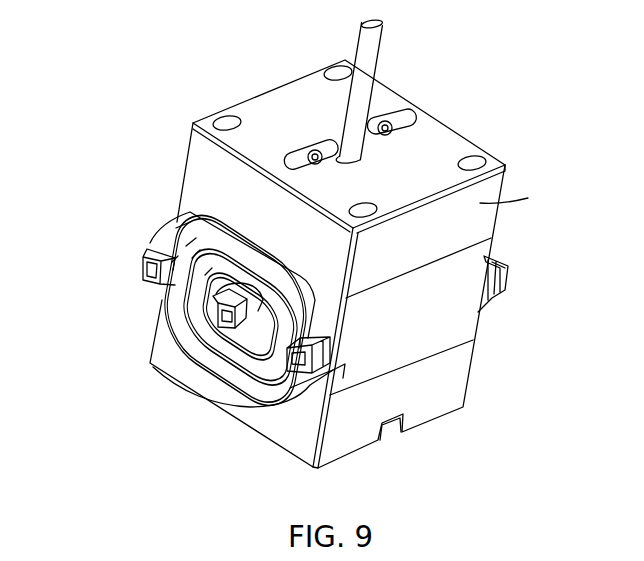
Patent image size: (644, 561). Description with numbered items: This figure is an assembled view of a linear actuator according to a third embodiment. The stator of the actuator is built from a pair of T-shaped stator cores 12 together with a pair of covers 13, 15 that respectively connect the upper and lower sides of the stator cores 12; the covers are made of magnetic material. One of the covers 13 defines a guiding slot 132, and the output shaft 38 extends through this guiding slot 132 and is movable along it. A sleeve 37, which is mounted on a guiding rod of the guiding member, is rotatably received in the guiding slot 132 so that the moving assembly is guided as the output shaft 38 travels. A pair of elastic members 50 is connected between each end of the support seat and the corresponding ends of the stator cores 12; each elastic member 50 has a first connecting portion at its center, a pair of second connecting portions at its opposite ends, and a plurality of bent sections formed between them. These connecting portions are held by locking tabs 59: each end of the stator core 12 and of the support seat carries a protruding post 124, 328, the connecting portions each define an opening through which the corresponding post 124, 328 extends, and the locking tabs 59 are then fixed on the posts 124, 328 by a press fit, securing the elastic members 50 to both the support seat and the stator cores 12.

The stator core 12 is at (455, 298).
The cover 13 is at (528, 198).
The cover 15 is at (453, 385).
The sleeve 37 is at (305, 157).
The output shaft 38 is at (368, 66).
The elastic member 50 is at (223, 373).
The locking tab 59 is at (162, 240).
The post 124 is at (143, 273).
The guiding slot 132 is at (400, 128).
The post 328 is at (217, 317).